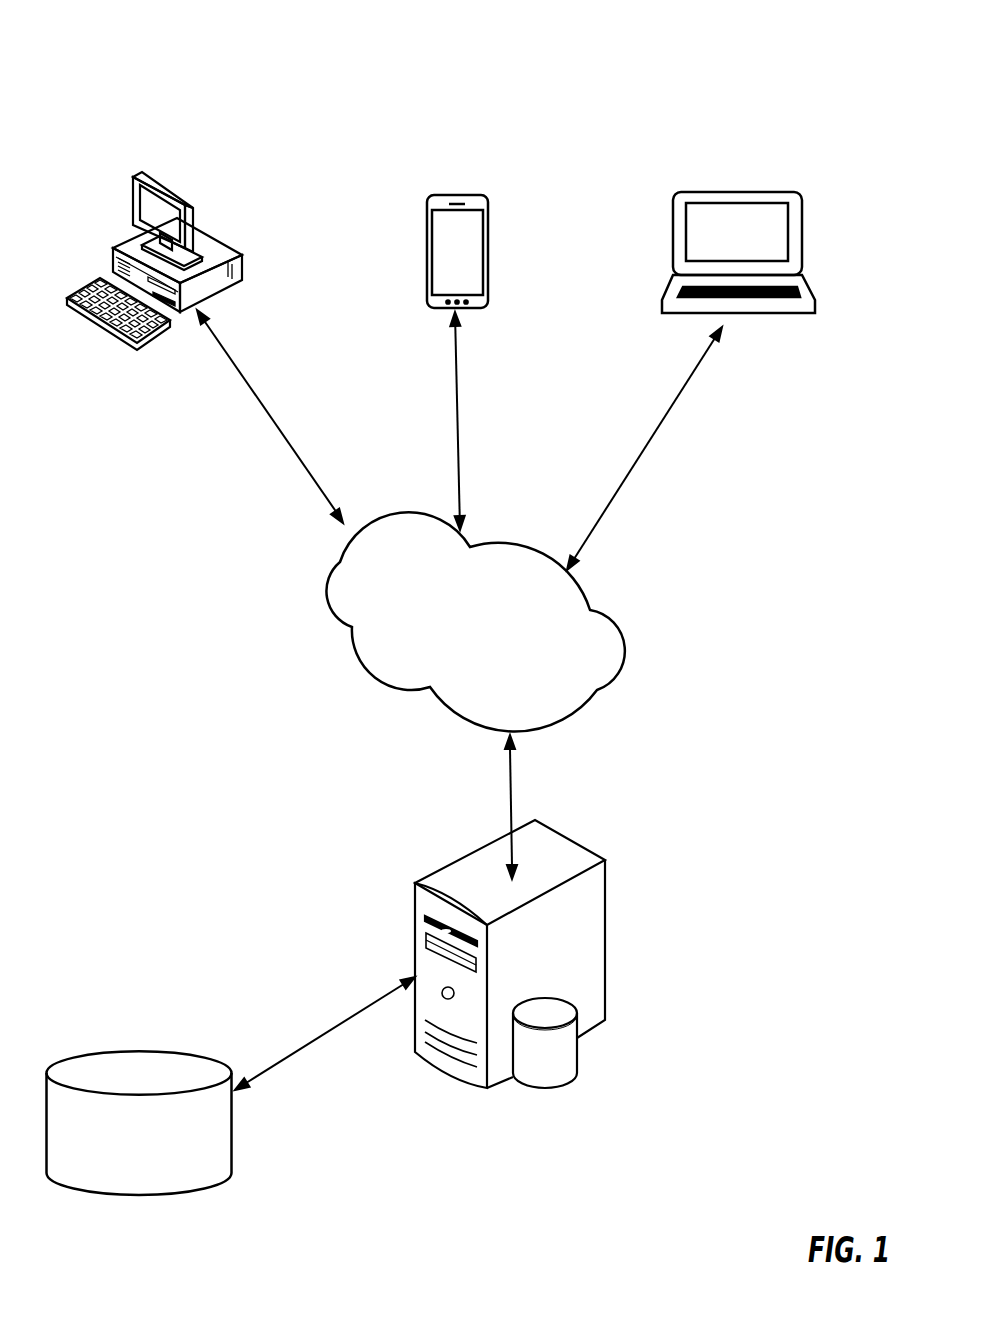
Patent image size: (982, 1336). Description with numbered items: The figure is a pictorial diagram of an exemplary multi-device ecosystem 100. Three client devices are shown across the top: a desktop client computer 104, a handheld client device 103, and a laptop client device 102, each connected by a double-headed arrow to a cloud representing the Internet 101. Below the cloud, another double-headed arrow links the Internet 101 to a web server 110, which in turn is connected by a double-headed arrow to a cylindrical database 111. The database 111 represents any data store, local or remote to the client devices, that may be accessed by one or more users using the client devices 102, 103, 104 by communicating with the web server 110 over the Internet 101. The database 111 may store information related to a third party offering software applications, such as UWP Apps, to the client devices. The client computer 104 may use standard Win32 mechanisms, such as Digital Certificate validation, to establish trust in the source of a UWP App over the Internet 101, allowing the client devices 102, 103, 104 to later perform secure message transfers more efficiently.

The multi-device ecosystem 100 is at (150, 60).
The Internet 101 is at (622, 623).
The client device 102 is at (735, 192).
The client device 103 is at (458, 195).
The client computer 104 is at (168, 183).
The web server 110 is at (415, 930).
The database 111 is at (232, 1120).